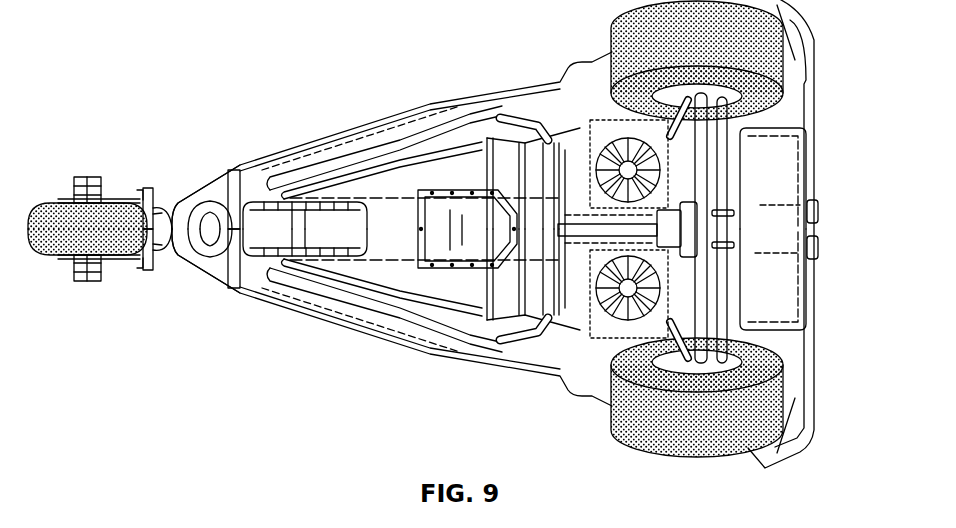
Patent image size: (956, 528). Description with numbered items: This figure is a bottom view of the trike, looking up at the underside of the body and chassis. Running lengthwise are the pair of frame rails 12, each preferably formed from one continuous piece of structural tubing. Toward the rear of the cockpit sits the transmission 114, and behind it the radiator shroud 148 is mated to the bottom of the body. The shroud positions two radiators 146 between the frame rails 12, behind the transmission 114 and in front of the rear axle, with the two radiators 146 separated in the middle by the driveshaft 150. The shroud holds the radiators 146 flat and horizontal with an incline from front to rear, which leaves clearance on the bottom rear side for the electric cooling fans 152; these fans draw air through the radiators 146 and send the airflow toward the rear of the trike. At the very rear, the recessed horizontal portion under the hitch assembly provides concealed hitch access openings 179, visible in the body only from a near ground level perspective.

The frame rails 12 is at (588, 140).
The transmission 114 is at (438, 215).
The radiators 146 is at (577, 157).
The radiator shroud 148 is at (548, 137).
The driveshaft 150 is at (578, 240).
The electric cooling fans 152 is at (627, 160).
The hitch access openings 179 is at (819, 211).